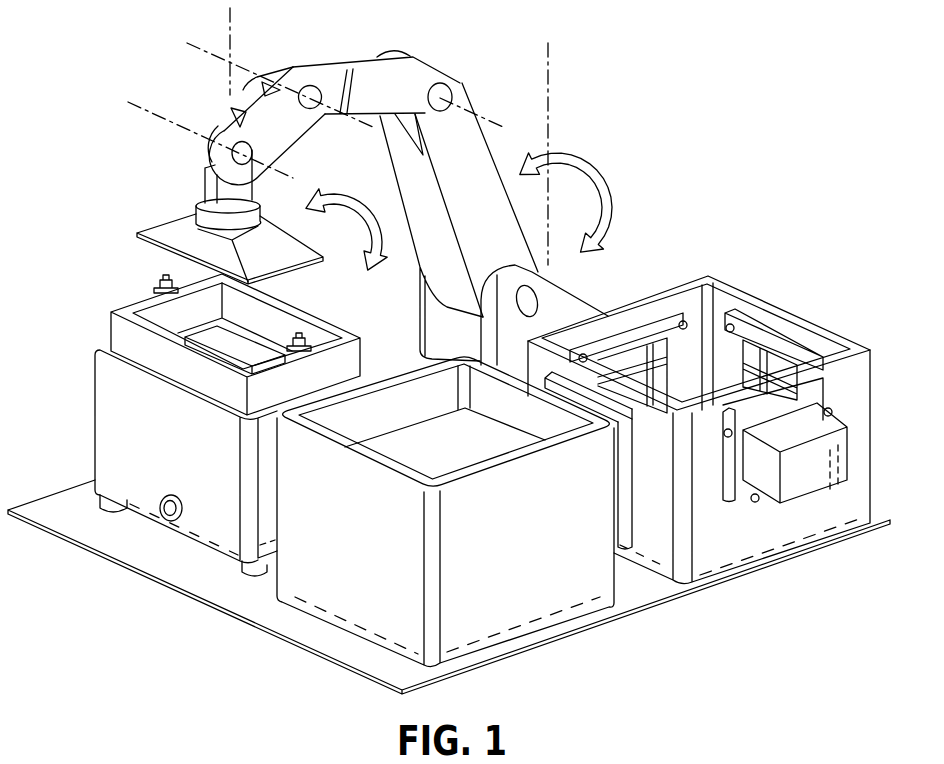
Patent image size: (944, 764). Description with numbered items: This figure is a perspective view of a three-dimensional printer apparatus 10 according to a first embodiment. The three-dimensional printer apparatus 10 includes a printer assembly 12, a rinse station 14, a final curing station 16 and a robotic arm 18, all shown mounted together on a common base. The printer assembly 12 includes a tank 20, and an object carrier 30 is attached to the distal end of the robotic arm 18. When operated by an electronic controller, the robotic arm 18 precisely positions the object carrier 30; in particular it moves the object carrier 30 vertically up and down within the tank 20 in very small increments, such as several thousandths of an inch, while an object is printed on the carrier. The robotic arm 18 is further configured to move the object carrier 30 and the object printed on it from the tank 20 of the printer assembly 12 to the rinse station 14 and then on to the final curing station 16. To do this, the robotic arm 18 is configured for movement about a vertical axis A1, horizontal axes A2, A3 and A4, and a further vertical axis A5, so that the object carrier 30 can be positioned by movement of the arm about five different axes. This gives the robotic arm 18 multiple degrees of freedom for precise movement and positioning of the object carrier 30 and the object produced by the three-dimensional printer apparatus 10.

The three-dimensional printer apparatus 10 is at (724, 131).
The printer assembly 12 is at (138, 296).
The rinse station 14 is at (548, 576).
The final curing station 16 is at (788, 307).
The robotic arm 18 is at (493, 167).
The tank 20 is at (127, 413).
The object carrier 30 is at (273, 250).
The vertical axis A1 is at (548, 67).
The horizontal axis A2 is at (490, 120).
The horizontal axis A3 is at (203, 50).
The horizontal axis A4 is at (140, 110).
The vertical axis A5 is at (230, 22).